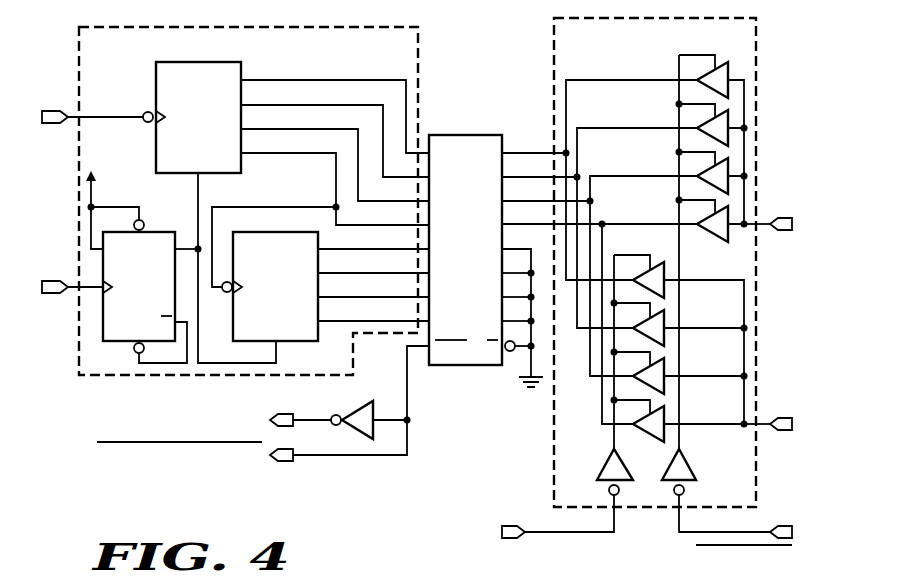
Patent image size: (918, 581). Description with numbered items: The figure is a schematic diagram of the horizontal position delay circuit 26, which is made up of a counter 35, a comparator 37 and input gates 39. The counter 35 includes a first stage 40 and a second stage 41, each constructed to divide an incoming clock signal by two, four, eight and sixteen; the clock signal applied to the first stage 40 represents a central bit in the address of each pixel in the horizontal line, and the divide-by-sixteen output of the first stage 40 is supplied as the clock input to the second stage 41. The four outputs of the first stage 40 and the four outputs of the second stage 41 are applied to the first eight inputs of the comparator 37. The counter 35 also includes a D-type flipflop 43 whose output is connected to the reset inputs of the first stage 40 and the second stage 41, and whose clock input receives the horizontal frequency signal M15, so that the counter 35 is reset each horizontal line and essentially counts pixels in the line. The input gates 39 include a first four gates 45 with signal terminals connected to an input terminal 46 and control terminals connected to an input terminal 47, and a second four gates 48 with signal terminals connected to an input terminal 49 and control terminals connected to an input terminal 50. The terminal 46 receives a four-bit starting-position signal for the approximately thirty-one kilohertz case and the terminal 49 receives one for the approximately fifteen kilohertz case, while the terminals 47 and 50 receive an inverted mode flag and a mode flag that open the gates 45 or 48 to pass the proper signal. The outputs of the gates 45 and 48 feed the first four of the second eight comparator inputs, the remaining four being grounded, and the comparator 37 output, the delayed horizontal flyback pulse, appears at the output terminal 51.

The horizontal position delay circuit 26 is at (372, 512).
The counter 35 is at (418, 63).
The comparator 37 is at (482, 135).
The input gates 39 is at (554, 63).
The first stage 40 is at (156, 72).
The second stage 41 is at (303, 341).
The D-type flipflop 43 is at (158, 232).
The first four gates 45 is at (744, 105).
The input terminal 46 is at (781, 216).
The input terminal 47 is at (785, 523).
The second four gates 48 is at (744, 307).
The input terminal 49 is at (781, 411).
The input terminal 50 is at (512, 523).
The output terminal 51 is at (290, 413).